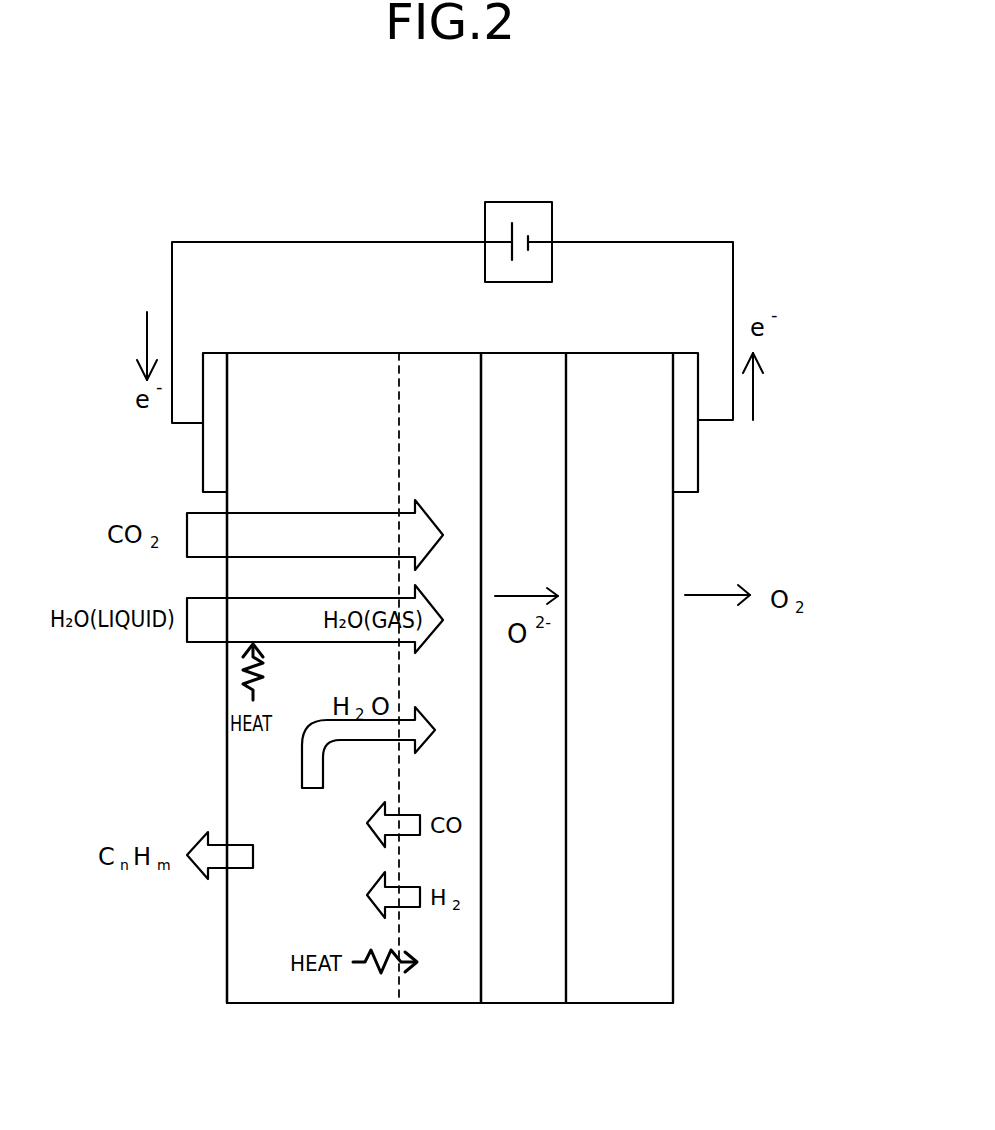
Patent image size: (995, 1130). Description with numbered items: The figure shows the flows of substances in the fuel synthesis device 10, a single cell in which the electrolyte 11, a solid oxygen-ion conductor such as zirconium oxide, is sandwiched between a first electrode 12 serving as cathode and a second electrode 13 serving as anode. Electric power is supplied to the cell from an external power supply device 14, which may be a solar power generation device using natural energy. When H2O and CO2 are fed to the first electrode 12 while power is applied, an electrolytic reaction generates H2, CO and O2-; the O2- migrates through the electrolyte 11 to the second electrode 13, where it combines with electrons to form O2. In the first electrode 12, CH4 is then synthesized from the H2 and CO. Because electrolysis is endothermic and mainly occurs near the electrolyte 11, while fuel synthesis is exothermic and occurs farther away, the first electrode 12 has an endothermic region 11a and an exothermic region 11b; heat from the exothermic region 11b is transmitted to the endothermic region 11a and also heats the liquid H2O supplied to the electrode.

The fuel synthesis device 10 is at (673, 773).
The electrolyte 11 is at (503, 353).
The endothermic region 11a is at (481, 1010).
The exothermic region 11b is at (399, 1010).
The first electrode 12 is at (353, 353).
The second electrode 13 is at (597, 353).
The power supply device 14 is at (524, 202).